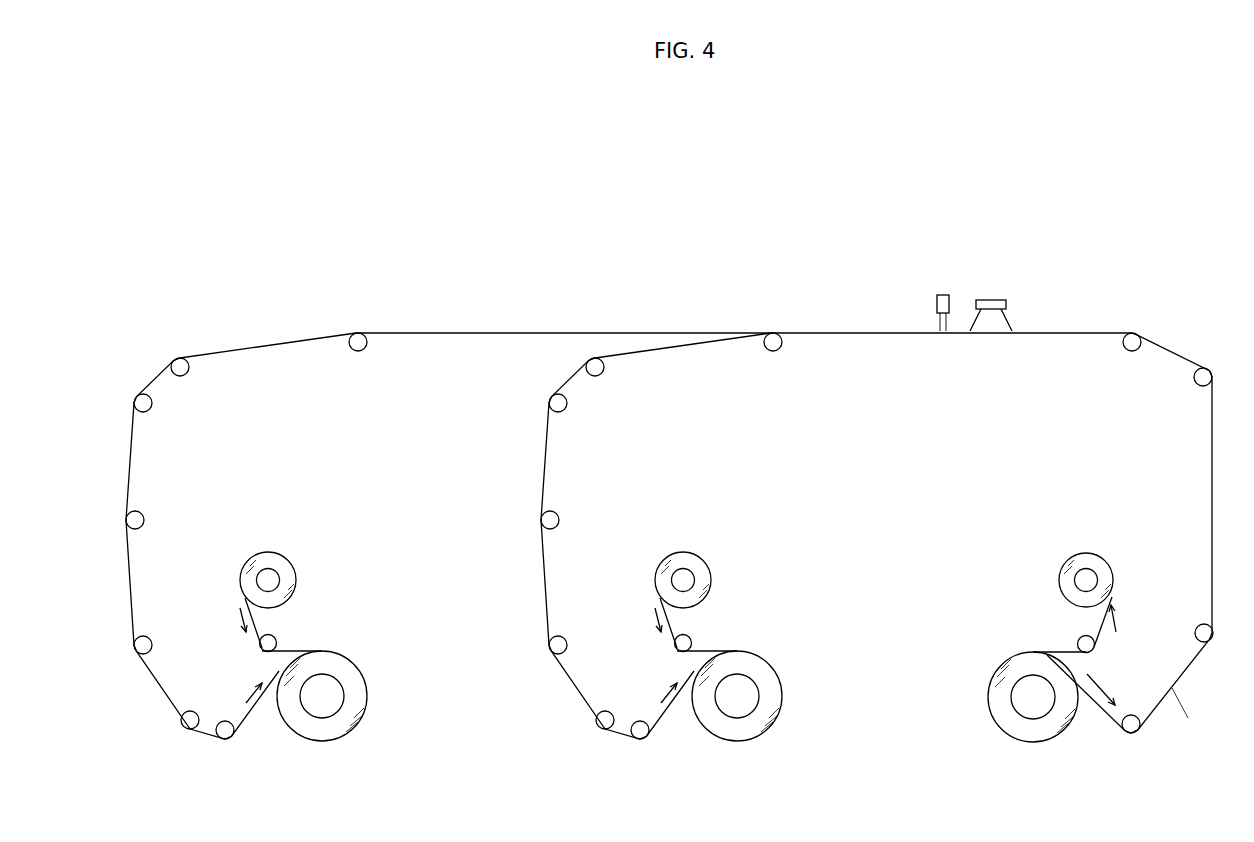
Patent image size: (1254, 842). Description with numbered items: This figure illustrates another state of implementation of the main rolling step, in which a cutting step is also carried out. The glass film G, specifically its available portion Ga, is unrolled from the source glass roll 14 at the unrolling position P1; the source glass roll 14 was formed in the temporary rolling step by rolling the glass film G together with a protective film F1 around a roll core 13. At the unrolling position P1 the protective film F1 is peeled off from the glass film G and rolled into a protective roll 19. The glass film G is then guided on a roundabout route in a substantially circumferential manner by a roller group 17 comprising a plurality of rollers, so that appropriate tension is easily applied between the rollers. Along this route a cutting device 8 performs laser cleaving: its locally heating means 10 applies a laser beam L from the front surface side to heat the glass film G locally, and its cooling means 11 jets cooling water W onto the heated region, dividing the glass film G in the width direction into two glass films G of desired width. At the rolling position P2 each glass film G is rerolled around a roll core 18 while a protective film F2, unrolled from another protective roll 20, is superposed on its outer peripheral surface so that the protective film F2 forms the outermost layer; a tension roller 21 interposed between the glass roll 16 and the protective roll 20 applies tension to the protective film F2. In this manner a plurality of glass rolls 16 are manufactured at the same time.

The cutting device 8 is at (1005, 272).
The locally heating means 10 is at (997, 299).
The cooling means 11 is at (940, 294).
The roll core 13 is at (1003, 711).
The source glass roll 14 is at (1002, 660).
The glass roll 16 is at (356, 657).
The roller group 17 is at (363, 351).
The roll core 18 is at (345, 695).
The protective roll 19 is at (1105, 560).
The protective roll 20 is at (257, 553).
The tension roller 21 is at (259, 651).
The cooling water W is at (935, 330).
The laser beam L is at (1013, 328).
The protective film F1 is at (1095, 620).
The protective film F2 is at (256, 620).
The unrolling position P1 is at (1032, 770).
The rolling position P2 is at (530, 770).
The glass film G is at (1199, 722).